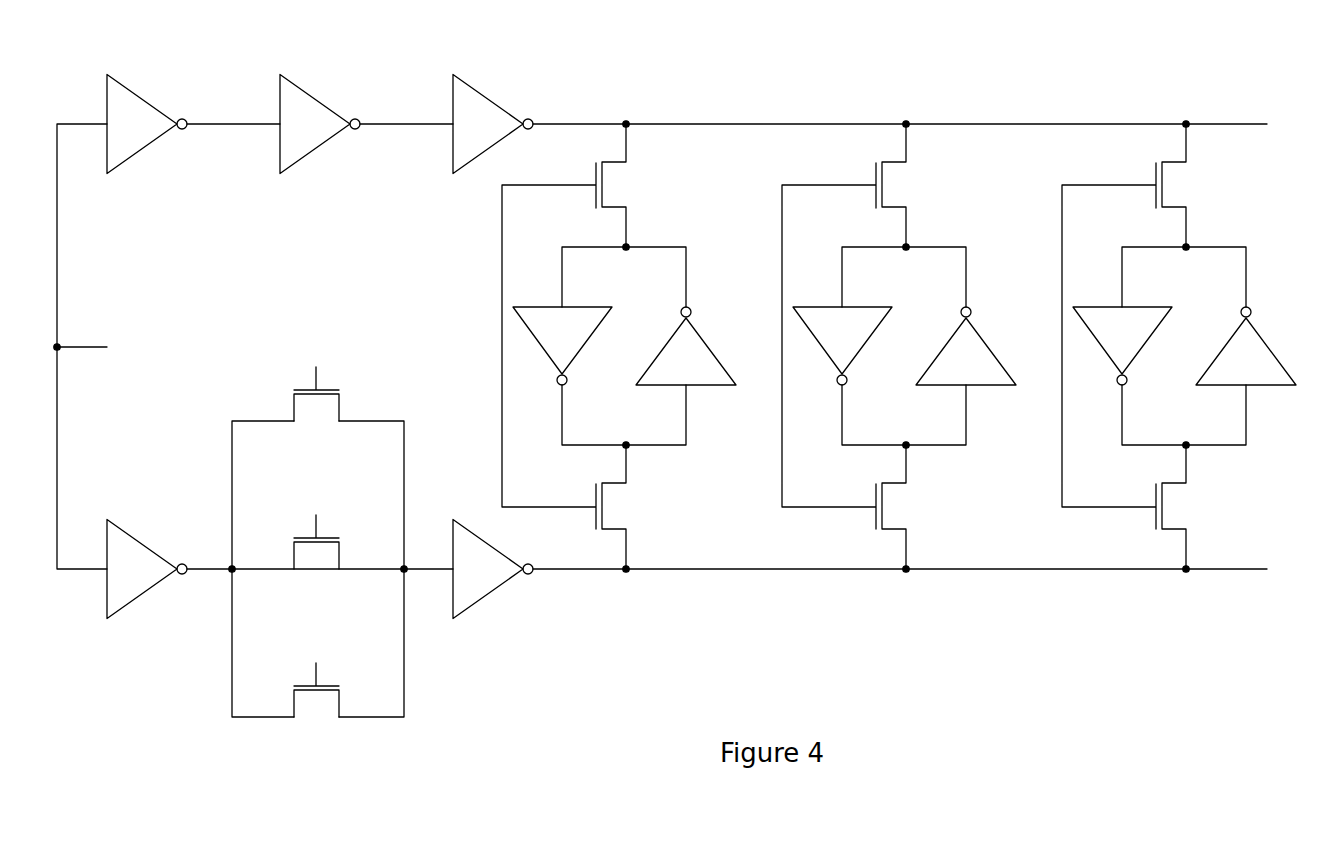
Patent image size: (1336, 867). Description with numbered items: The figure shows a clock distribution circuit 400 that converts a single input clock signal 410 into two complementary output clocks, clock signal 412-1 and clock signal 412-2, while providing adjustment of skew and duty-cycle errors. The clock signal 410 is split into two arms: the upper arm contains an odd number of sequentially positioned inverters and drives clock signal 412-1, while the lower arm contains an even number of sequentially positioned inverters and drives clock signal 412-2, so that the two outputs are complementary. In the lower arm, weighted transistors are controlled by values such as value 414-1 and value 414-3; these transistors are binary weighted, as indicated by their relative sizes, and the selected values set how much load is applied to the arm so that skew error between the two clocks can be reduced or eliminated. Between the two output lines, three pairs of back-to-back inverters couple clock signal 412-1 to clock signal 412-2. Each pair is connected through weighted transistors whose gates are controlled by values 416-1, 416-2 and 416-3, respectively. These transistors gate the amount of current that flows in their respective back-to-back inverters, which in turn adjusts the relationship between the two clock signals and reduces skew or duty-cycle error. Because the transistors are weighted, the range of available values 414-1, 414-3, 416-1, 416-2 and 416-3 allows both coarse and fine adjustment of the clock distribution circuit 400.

The clock distribution circuit 400 is at (586, 67).
The clock signal 410 is at (140, 346).
The clock signal 412-1 is at (1206, 124).
The clock signal 412-2 is at (1206, 569).
The value C_i 414-1 is at (318, 451).
The value C_i 414-3 is at (318, 643).
The value D_i 416-1 is at (502, 347).
The value D_i 416-2 is at (782, 347).
The value D_i 416-3 is at (1062, 347).